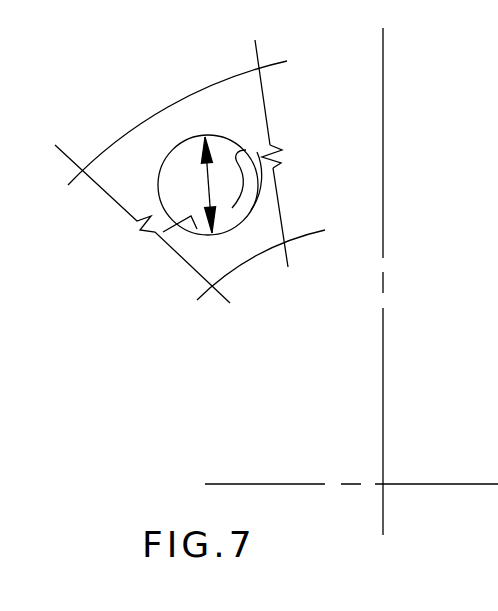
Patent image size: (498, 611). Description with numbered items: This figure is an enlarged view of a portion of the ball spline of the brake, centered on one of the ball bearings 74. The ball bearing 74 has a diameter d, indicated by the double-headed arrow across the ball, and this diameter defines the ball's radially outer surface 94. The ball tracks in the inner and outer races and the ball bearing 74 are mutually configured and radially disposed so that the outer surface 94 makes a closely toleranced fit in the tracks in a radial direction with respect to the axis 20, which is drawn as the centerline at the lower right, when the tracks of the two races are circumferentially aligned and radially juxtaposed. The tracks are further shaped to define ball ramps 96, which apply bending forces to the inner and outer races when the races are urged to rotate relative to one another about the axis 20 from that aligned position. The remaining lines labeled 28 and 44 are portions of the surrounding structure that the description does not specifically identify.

The axis 20 is at (297, 484).
The tube 28 is at (247, 103).
The ball bearing 74 is at (234, 152).
The ball ramp 96 is at (263, 160).
The radially outer surface 94 is at (152, 236).
The housing outline 44 is at (305, 233).
The diameter d is at (205, 179).